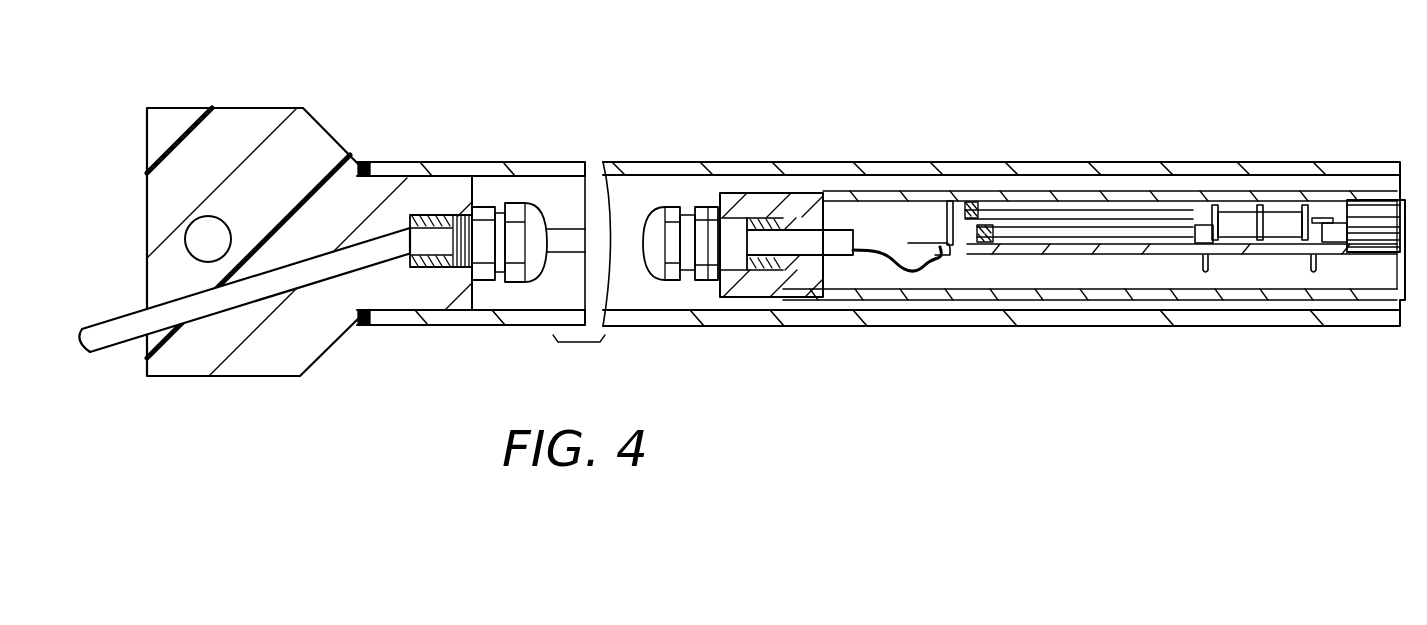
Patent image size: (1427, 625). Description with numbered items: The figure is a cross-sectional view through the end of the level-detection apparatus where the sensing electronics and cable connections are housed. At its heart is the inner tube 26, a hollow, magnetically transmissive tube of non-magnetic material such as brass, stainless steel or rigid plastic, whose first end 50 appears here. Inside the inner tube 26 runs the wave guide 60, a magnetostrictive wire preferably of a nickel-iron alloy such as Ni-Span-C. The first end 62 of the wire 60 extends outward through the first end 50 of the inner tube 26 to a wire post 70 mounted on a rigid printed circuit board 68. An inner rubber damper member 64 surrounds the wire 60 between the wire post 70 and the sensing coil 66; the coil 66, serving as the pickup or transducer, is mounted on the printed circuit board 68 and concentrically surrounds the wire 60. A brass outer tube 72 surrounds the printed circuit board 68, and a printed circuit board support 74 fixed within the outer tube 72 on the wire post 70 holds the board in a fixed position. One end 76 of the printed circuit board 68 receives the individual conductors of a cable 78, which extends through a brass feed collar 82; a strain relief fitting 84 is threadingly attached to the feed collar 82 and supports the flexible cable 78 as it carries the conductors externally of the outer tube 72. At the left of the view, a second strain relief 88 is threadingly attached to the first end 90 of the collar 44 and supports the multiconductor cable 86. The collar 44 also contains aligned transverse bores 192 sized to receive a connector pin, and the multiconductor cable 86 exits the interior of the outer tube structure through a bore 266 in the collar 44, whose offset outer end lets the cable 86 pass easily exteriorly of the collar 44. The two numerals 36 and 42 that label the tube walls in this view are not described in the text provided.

The inner tube 26 is at (1387, 240).
The outer tube 36 is at (1047, 160).
The tube 42 is at (371, 172).
The collar 44 is at (232, 128).
The first end 50 is at (1340, 182).
The wave guide 60 is at (1376, 223).
The first end 62 is at (950, 213).
The inner rubber damper member 64 is at (1045, 217).
The sensing coil 66 is at (1277, 223).
The printed circuit board 68 is at (1233, 252).
The wire post 70 is at (970, 240).
The outer tube 72 is at (771, 192).
The printed circuit board support 74 is at (966, 213).
The end 76 is at (923, 250).
The cable 78 is at (627, 247).
The feed collar 82 is at (738, 193).
The strain relief fitting 84 is at (668, 210).
The multiconductor cable 86 is at (123, 333).
The second strain relief 88 is at (513, 208).
The first end 90 is at (420, 190).
The transverse bores 192 is at (197, 224).
The bore 266 is at (247, 292).